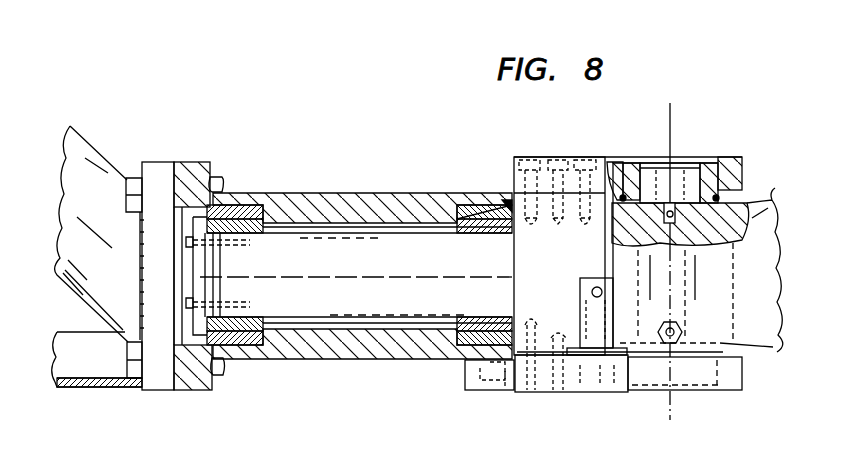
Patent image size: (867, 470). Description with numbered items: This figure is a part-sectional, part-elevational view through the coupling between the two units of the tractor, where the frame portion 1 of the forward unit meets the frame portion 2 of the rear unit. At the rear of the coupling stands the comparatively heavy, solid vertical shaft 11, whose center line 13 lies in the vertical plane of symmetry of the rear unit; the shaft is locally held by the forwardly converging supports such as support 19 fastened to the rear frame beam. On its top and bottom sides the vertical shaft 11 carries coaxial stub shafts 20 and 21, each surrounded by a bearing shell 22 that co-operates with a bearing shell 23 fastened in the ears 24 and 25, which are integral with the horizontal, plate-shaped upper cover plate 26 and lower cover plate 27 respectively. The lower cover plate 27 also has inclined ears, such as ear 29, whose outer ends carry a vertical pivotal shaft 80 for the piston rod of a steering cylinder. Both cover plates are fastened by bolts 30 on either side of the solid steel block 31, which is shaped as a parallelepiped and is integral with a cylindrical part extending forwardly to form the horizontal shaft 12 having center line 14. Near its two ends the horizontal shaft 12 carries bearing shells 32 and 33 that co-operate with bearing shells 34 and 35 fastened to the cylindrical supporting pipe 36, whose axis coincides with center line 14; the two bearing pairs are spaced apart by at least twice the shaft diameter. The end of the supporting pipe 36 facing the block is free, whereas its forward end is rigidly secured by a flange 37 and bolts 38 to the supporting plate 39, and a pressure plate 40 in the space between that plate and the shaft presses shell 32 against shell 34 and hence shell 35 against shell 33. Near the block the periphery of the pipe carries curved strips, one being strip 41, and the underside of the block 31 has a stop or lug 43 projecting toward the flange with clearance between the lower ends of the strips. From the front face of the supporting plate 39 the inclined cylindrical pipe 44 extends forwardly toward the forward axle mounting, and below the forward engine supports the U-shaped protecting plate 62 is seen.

The frame portion 1 is at (128, 394).
The frame portion 2 is at (770, 352).
The vertical shaft 11 is at (718, 290).
The horizontal shaft 12 is at (334, 314).
The center line 13 is at (671, 108).
The center line 14 is at (336, 275).
The support 19 is at (770, 203).
The stub shaft 20 is at (701, 164).
The stub shaft 21 is at (657, 378).
The bearing shell 22 is at (741, 162).
The bearing shell 23 is at (631, 163).
The ear 24 is at (683, 163).
The ear 25 is at (733, 381).
The upper cover plate 26 is at (605, 162).
The lower cover plate 27 is at (547, 393).
The ear 29 is at (610, 386).
The bolts 30 is at (592, 156).
The solid steel block 31 is at (523, 290).
The bearing shell 32 is at (234, 216).
The bearing shell 33 is at (488, 233).
The bearing shell 34 is at (277, 206).
The bearing shell 35 is at (490, 205).
The supporting pipe 36 is at (348, 193).
The flange 37 is at (211, 178).
The bolts 38 is at (126, 200).
The supporting plate 39 is at (158, 176).
The pressure plate 40 is at (202, 263).
The curved strip 41 is at (497, 360).
The stop or lug 43 is at (469, 373).
The cylindrical pipe 44 is at (86, 157).
The U-shaped protecting plate 62 is at (96, 384).
The vertical pivotal shaft 80 is at (593, 277).